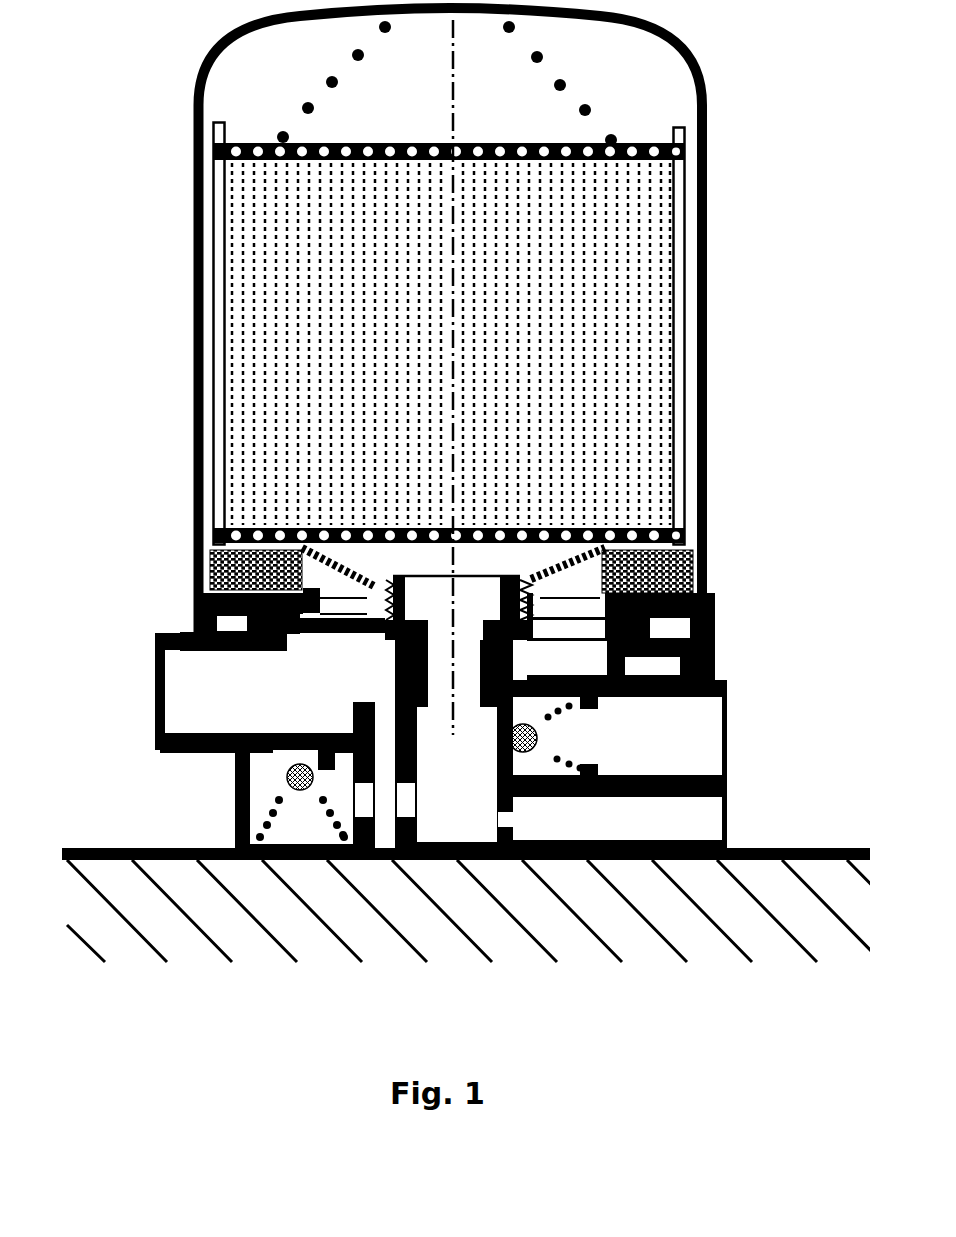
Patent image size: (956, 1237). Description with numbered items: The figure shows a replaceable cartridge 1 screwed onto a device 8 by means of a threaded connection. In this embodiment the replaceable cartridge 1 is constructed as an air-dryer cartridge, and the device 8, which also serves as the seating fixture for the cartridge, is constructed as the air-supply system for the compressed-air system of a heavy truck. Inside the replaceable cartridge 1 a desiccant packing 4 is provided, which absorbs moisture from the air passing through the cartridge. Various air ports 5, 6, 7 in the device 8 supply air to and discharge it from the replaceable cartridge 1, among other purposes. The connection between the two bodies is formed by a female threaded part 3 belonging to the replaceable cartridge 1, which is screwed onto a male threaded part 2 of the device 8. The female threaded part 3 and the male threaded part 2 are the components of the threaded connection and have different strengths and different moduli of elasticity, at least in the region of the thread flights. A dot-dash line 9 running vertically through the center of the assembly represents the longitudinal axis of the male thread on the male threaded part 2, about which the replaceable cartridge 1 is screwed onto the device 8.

The replaceable cartridge 1 is at (707, 242).
The male threaded part 2 is at (510, 605).
The female threaded part 3 is at (530, 613).
The desiccant packing 4 is at (585, 325).
The air port 5 is at (180, 697).
The air port 6 is at (705, 738).
The air port 7 is at (705, 826).
The device 8 is at (120, 850).
The dot-dash line 9 is at (455, 390).